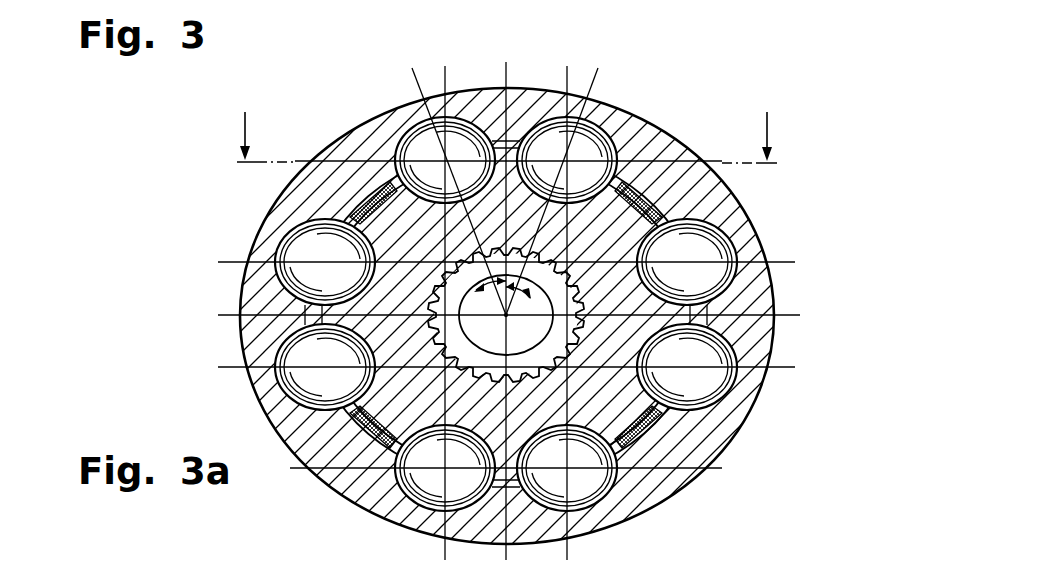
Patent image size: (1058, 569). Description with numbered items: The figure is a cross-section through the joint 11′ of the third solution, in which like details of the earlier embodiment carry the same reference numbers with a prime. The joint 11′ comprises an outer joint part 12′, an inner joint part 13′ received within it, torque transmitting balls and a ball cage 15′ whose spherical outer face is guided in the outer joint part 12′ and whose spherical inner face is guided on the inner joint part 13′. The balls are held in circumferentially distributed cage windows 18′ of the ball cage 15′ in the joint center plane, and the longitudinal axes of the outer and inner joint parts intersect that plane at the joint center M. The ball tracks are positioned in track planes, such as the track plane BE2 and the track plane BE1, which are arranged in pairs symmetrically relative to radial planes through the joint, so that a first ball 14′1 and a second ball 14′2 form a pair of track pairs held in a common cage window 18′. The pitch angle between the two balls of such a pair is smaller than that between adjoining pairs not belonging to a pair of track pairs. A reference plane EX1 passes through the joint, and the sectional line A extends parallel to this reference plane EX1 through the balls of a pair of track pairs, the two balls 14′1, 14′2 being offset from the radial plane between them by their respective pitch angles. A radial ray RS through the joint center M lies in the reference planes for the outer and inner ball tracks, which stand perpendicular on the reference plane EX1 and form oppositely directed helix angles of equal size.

The joint 11′ is at (700, 128).
The outer joint part 12′ is at (766, 300).
The inner joint part 13′ is at (640, 211).
The first ball 14′1 is at (410, 113).
The second ball 14′2 is at (607, 112).
The ball cage 15′ is at (655, 422).
The cage window 18′ is at (662, 412).
The track plane BE1 is at (445, 76).
The track plane BE2 is at (792, 262).
The radial ray RS is at (507, 78).
The reference plane EX1 is at (218, 316).
The joint center M is at (507, 316).
The sectional line A- A is at (505, 158).